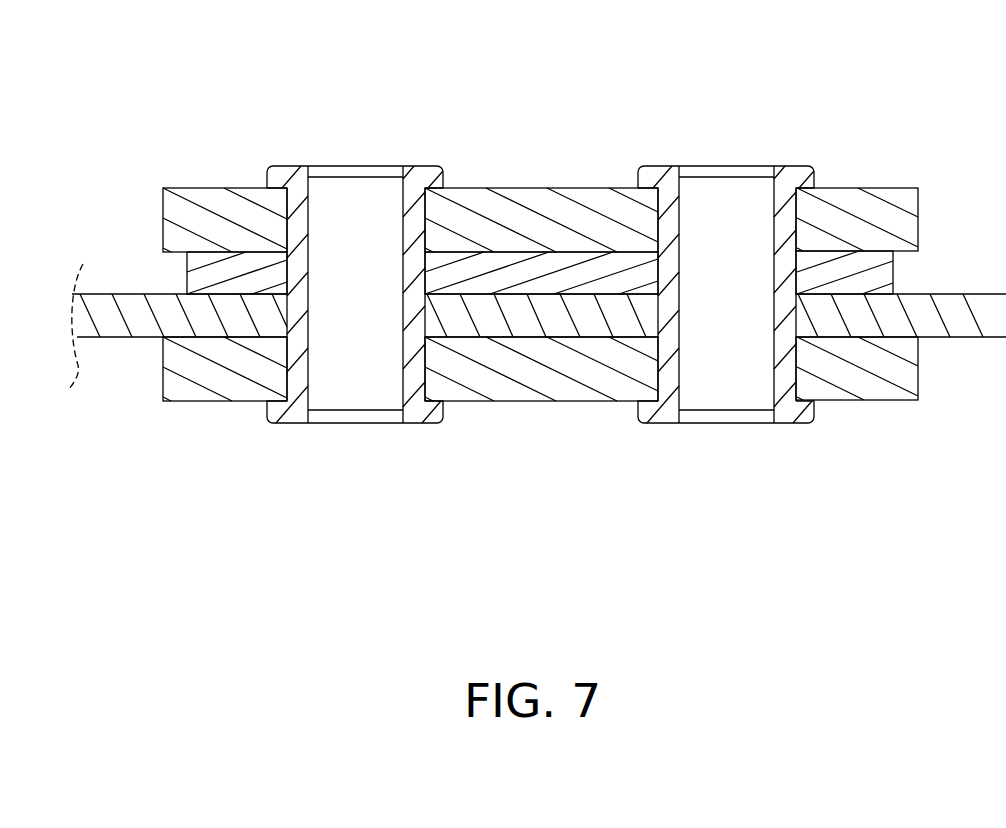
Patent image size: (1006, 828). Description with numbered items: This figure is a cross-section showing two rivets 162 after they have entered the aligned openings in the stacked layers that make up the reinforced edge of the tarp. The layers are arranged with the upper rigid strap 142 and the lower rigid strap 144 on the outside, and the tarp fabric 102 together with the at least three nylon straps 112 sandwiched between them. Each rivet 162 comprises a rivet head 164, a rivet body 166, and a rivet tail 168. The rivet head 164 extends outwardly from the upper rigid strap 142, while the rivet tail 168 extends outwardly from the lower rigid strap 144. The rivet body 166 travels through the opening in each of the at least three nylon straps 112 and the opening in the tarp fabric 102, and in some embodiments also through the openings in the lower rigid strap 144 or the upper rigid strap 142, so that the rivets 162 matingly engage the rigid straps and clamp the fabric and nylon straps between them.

The tarp fabric 102 is at (893, 278).
The nylon straps 112 is at (147, 337).
The upper rigid strap 142 is at (873, 400).
The lower rigid strap 144 is at (863, 188).
The rivet 162 is at (322, 94).
The rivet head 164 is at (333, 423).
The rivet body 166 is at (358, 352).
The rivet tail 168 is at (350, 167).